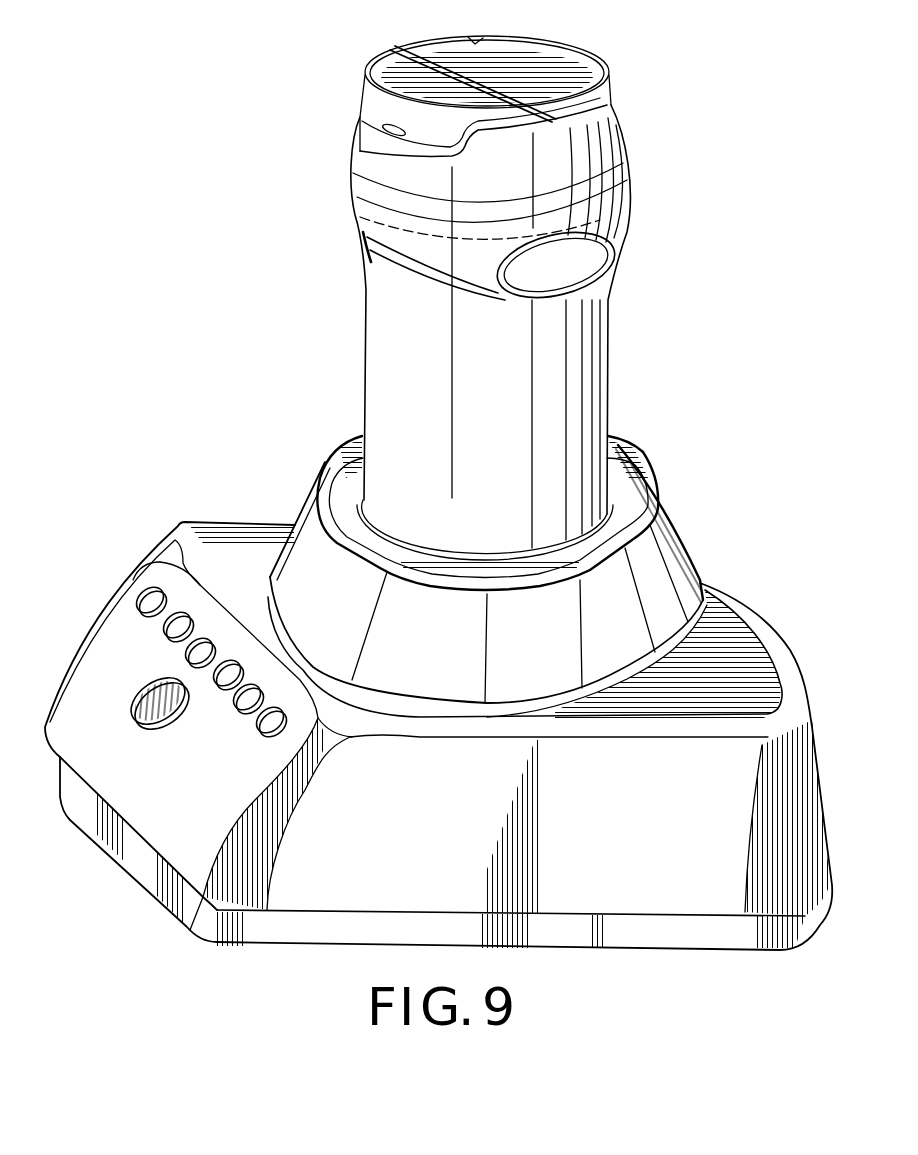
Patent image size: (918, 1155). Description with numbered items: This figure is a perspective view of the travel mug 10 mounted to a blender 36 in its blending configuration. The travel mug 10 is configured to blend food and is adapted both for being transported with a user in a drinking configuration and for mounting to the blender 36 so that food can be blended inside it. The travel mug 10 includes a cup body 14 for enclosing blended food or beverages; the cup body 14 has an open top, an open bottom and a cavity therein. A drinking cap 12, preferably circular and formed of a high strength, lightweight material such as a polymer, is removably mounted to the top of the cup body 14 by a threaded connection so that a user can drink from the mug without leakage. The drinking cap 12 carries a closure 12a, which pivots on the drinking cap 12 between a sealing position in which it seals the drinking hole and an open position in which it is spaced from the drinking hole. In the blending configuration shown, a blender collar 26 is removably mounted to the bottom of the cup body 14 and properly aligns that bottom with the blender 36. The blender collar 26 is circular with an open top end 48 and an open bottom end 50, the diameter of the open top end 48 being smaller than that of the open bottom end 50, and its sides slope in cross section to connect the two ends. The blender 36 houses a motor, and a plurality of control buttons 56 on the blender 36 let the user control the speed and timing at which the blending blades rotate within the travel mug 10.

The travel mug 10 is at (360, 383).
The drinking cap 12 is at (620, 153).
The closure 12a is at (372, 100).
The cup body 14 is at (576, 392).
The blender collar 26 is at (653, 567).
The blender 36 is at (260, 512).
The open top end 48 is at (340, 497).
The open bottom end 50 is at (397, 706).
The control buttons 56 is at (203, 640).